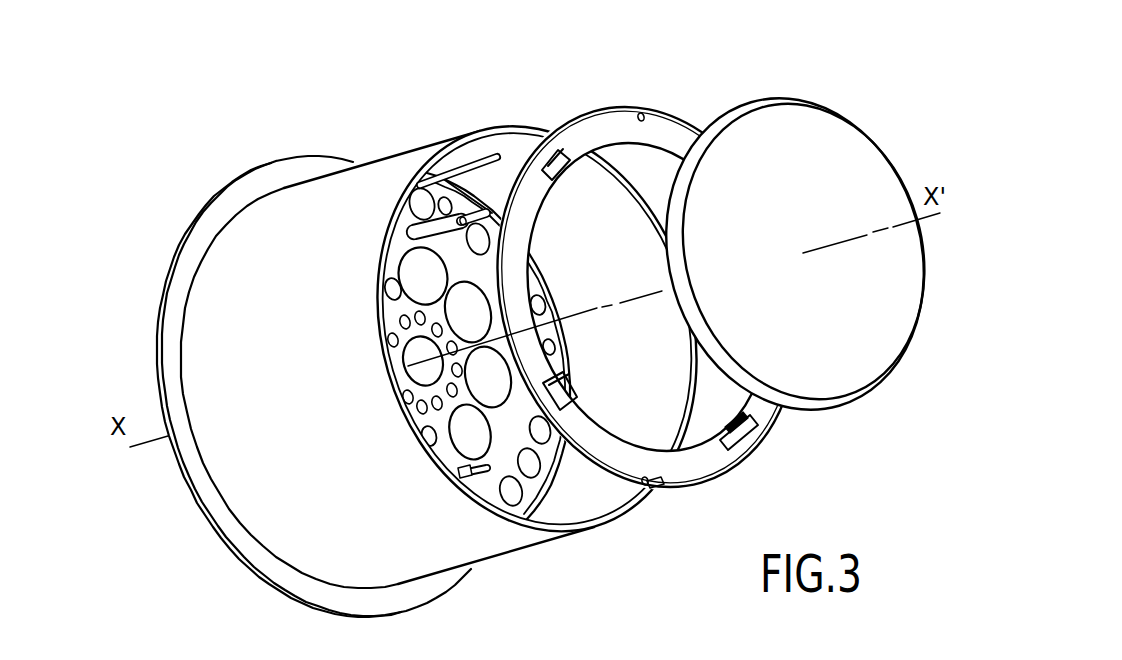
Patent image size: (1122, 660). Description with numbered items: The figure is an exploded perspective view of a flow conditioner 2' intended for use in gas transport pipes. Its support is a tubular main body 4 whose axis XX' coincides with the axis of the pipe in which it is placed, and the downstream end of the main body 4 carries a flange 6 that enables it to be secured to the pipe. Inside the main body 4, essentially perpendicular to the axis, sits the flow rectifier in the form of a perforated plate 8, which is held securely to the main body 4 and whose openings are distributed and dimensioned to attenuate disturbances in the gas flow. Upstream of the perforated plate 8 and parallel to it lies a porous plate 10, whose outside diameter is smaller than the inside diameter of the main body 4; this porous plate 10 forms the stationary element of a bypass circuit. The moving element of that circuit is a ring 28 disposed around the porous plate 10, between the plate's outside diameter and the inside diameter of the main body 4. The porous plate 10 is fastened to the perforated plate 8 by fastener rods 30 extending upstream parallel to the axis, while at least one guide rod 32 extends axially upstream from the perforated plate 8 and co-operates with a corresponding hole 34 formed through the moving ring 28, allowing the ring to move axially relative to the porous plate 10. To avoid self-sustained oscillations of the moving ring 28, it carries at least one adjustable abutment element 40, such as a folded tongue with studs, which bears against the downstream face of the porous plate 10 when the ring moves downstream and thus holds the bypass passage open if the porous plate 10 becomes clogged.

The flow conditioner 2' is at (450, 317).
The tubular main body 4 is at (370, 156).
The flange 6 is at (237, 196).
The perforated plate 8 is at (551, 462).
The porous plate 10 is at (838, 377).
The moving ring 28 is at (648, 306).
The fastener rods 30 is at (435, 240).
The guide rod 32 is at (460, 158).
The hole 34 is at (647, 116).
The adjustable abutment element 40 is at (563, 178).